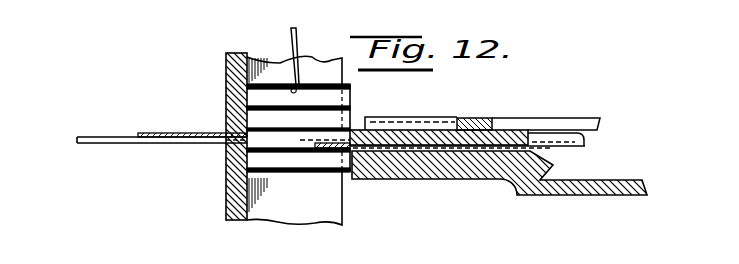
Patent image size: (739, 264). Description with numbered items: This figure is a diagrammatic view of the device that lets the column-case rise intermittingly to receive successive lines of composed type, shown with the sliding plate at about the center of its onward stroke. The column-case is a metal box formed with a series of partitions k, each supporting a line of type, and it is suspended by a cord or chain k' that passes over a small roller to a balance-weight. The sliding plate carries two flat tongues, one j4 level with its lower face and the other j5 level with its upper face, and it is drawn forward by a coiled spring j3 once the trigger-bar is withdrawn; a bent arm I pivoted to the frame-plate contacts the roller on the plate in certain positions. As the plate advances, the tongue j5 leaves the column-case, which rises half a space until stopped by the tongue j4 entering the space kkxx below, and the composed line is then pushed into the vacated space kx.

The cord or chain k' is at (298, 60).
The space kx is at (298, 107).
The space kkxx is at (300, 141).
The partitions k is at (298, 186).
The tongue j5 is at (202, 133).
The tongue j4 is at (387, 152).
The coiled spring j3 is at (499, 173).
The bent arm I is at (483, 117).